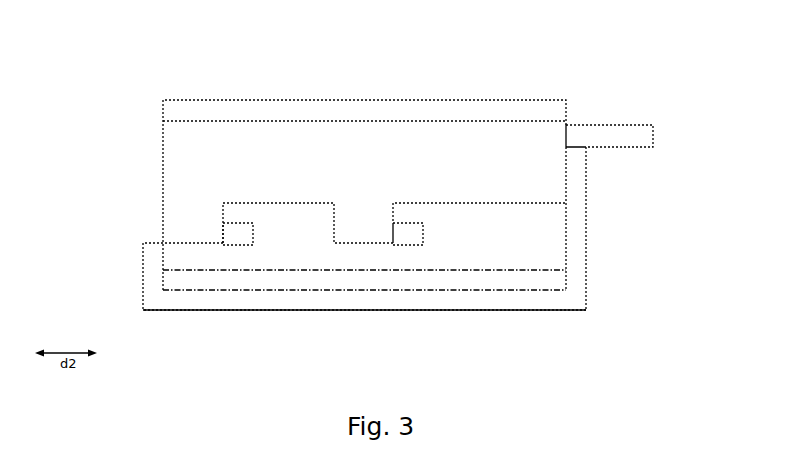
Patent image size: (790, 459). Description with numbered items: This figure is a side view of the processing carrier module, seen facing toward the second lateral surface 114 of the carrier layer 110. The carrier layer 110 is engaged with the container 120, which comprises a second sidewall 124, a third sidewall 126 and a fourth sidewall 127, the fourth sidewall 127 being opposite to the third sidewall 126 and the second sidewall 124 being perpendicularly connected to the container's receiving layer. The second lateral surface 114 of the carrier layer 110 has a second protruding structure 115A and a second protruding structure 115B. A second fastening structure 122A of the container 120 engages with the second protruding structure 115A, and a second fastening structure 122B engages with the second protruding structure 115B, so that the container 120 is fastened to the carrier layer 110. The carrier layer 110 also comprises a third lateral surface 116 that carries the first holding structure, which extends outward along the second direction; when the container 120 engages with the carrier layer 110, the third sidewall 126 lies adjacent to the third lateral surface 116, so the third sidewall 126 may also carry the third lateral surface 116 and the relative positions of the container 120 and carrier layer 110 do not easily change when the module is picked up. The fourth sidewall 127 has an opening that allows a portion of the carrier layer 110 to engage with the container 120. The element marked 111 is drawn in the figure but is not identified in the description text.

The carrier layer 110 is at (383, 52).
The second lateral surface 114 is at (183, 178).
The third lateral surface 116 is at (656, 137).
The third sidewall 126 is at (575, 200).
The second sidewall 124 is at (555, 237).
The fourth sidewall 127 is at (140, 257).
The second fastening structure 122B is at (253, 243).
The second fastening structure 122A is at (423, 243).
The second protruding structure 115B is at (242, 238).
The second protruding structure 115A is at (412, 237).
The semiconductor die 111 is at (242, 283).
The container 120 is at (403, 326).